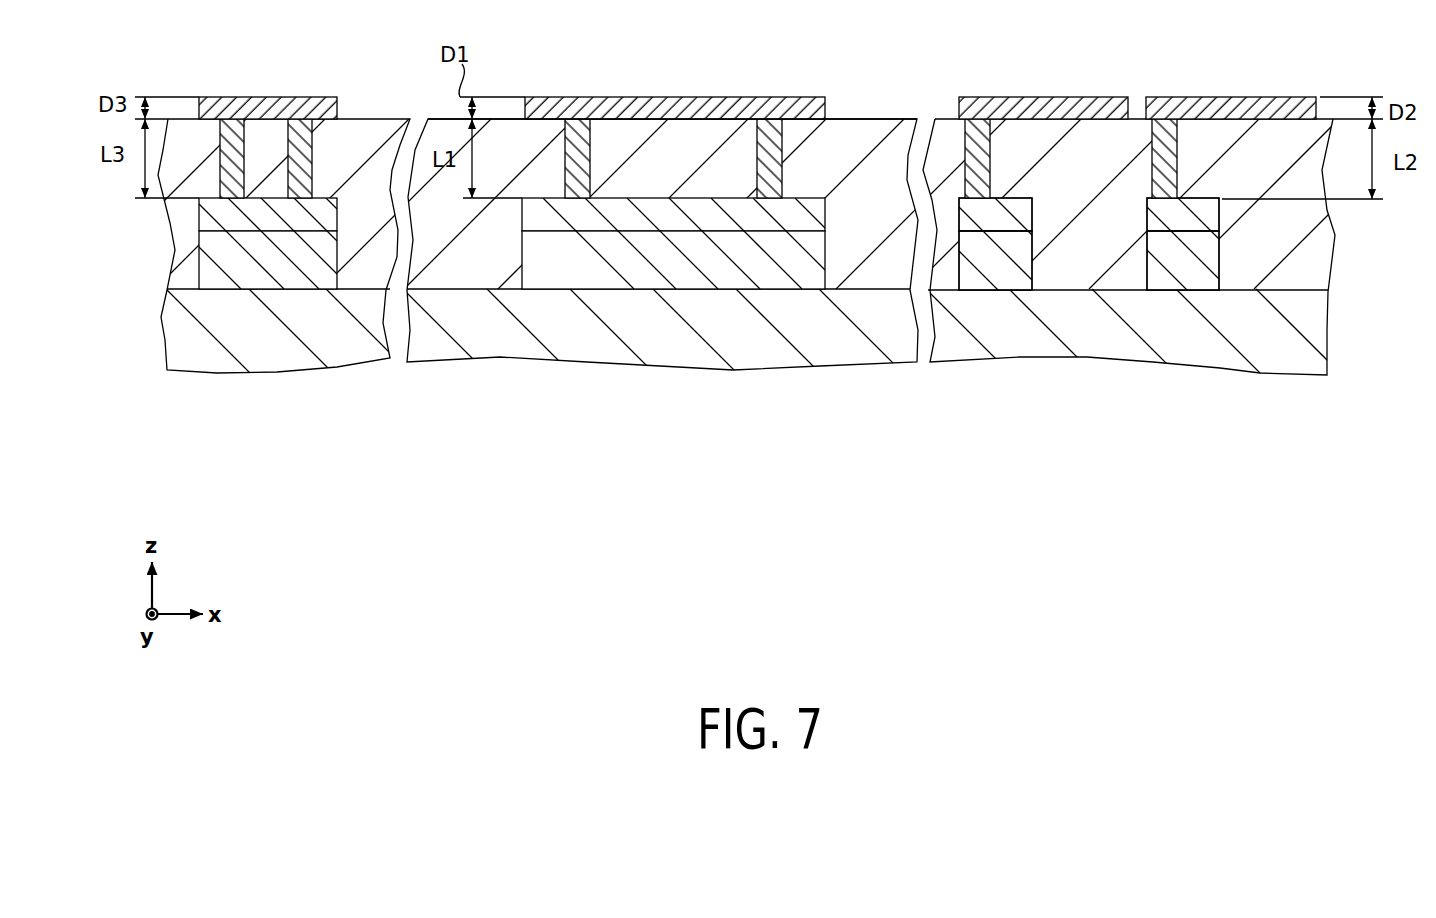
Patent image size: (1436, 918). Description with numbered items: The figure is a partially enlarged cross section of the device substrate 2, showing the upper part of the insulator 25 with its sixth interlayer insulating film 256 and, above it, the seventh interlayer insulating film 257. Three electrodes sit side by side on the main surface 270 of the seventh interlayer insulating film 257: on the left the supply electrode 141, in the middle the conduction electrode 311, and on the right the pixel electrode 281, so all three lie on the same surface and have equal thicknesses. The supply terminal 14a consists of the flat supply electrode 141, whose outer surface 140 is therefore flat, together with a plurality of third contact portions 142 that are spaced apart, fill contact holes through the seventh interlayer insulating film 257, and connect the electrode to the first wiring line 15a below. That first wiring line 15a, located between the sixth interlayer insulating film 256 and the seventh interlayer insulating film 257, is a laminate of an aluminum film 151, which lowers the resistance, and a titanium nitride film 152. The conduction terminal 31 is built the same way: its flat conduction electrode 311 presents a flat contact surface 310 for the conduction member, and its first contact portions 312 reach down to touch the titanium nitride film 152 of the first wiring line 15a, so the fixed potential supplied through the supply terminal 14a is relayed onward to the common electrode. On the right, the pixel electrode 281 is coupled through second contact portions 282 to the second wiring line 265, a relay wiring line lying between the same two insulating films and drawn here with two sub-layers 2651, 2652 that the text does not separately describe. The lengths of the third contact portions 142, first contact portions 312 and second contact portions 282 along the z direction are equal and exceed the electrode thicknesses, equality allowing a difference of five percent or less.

The device substrate 2 is at (1320, 84).
The supply terminal 14a is at (302, 418).
The outer surface 140 is at (275, 96).
The supply electrode 141 is at (207, 121).
The third contact portions 142 is at (233, 163).
The first wiring line 15a is at (418, 418).
The aluminum film 151 is at (322, 213).
The titanium nitride film 152 is at (307, 258).
The insulator 25 is at (1338, 367).
The sixth interlayer insulating film 256 is at (1313, 335).
The seventh interlayer insulating film 257 is at (1313, 262).
The second wiring line 265 is at (1090, 418).
The first connection portion layer 2651 is at (963, 208).
The second connection portion layer 2652 is at (988, 268).
The main surface 270 is at (868, 119).
The pixel electrode 281 is at (1062, 110).
The second contact portion 282 is at (978, 167).
The conduction terminal 31 is at (663, 418).
The contact surface 310 is at (680, 97).
The conduction electrode 311 is at (547, 103).
The first contact portions 312 is at (577, 167).